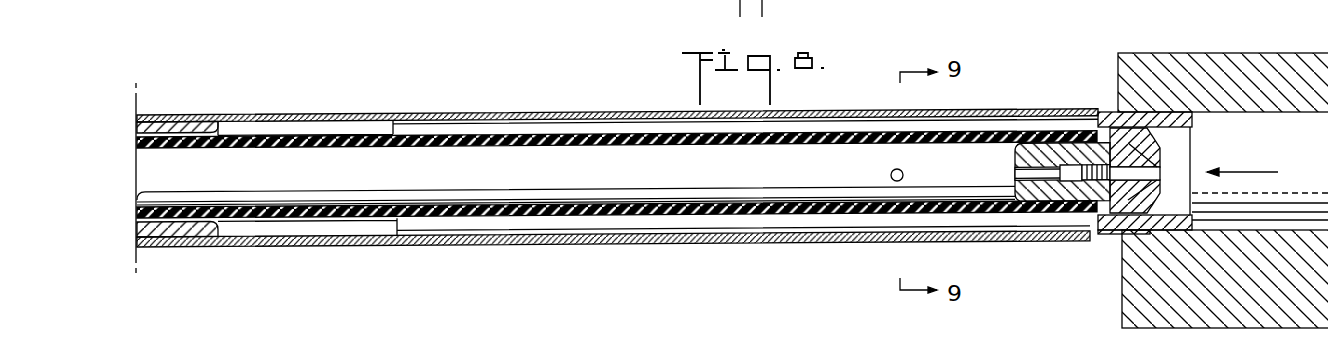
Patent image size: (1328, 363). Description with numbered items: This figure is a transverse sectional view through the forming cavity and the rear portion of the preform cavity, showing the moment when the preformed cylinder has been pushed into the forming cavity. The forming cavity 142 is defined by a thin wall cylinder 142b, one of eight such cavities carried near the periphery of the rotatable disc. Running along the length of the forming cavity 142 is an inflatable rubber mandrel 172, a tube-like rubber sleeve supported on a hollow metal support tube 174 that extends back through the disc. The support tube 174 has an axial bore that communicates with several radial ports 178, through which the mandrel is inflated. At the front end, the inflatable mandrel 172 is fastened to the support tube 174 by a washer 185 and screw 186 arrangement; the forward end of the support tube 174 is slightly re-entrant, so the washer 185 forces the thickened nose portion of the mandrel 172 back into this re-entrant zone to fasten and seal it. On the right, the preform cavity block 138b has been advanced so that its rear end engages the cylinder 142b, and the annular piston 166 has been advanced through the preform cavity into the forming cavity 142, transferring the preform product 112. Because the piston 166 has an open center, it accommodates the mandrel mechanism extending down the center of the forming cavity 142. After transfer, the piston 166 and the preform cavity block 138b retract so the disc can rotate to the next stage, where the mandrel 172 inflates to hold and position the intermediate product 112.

The preform product 112 is at (540, 117).
The thin wall cylinder 142b is at (238, 114).
The forming cavity 142 is at (308, 124).
The inflatable rubber mandrel 172 is at (287, 212).
The support tube 174 is at (243, 180).
The radial ports 178 is at (890, 173).
The screw 186 is at (1120, 158).
The washer 185 is at (1147, 133).
The piston 166 is at (1100, 234).
The preform cavity block 138b is at (1216, 58).